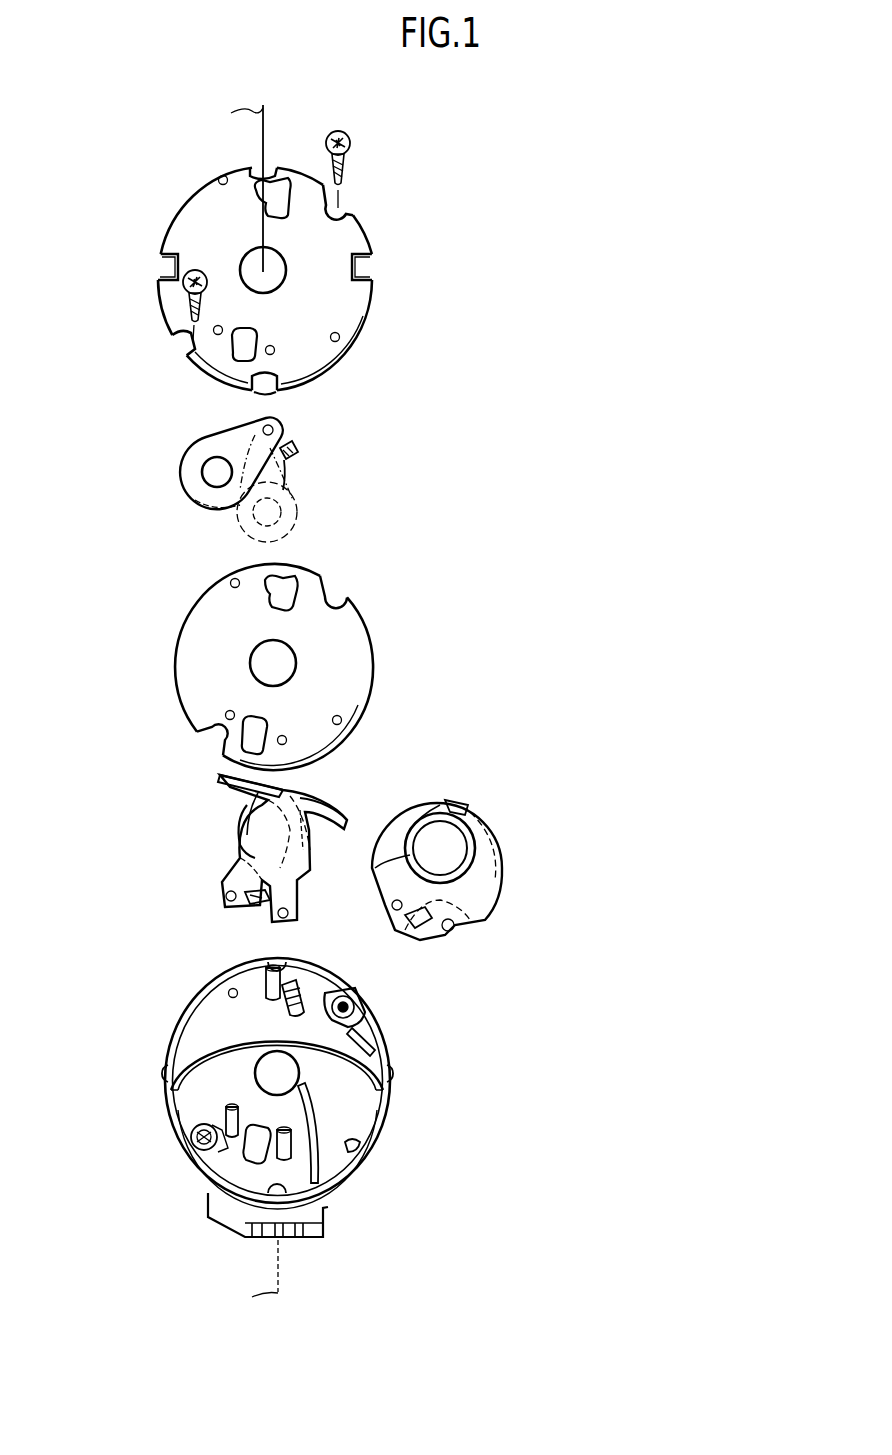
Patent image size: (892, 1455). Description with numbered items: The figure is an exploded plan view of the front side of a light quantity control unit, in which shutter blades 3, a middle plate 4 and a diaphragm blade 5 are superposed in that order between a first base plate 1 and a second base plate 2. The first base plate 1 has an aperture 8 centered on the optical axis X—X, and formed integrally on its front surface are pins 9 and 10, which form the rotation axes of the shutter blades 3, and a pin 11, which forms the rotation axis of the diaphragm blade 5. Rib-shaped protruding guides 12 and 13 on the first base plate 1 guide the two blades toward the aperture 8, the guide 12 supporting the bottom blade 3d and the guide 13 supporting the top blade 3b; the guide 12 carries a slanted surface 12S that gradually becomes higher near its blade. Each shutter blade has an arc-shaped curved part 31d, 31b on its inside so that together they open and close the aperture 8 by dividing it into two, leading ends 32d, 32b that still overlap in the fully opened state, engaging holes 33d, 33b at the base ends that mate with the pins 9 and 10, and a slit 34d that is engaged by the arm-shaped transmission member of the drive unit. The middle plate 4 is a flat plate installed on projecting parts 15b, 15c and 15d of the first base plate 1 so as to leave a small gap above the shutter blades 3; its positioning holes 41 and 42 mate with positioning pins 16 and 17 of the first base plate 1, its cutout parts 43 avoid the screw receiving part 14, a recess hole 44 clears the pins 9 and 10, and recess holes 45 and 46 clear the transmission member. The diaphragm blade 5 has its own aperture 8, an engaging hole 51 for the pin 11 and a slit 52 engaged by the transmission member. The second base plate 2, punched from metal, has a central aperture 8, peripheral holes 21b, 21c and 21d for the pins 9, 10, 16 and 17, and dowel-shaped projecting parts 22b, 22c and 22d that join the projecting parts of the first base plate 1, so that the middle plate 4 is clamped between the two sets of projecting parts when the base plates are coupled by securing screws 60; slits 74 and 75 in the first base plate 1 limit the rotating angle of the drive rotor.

The first base plate 1 is at (138, 1027).
The second base plate 2 is at (398, 234).
The shutter blades 3 is at (152, 829).
The middle plate 4 is at (390, 658).
The diaphragm blade 5 is at (334, 466).
The aperture 8 is at (253, 263).
The pin 9 is at (295, 1141).
The pin 10 is at (226, 1119).
The pin 11 is at (270, 991).
The protruding guide 12 is at (220, 1053).
The slanted surface 12S is at (370, 1045).
The protruding guide 13 is at (317, 1104).
The receiving part 14 is at (355, 1005).
The projecting part 15b is at (383, 1074).
The projecting part 15c is at (275, 963).
The projecting part 15d is at (168, 1074).
The positioning pin 16 is at (229, 992).
The positioning pin 17 is at (360, 1147).
The hole 21b is at (272, 347).
The hole 21c is at (340, 337).
The hole 21d is at (220, 177).
The dowel shape projecting part 22b is at (254, 394).
The dowel shape projecting part 22c is at (366, 269).
The dowel shape projecting part 22d is at (271, 172).
The arc shape curved part 31b is at (250, 829).
The arc shape curved part 31d is at (419, 823).
The leading end 32b is at (220, 779).
The leading end 32d is at (347, 822).
The engaging hole 33b is at (225, 901).
The engaging hole 33d is at (290, 914).
The slit 34d is at (245, 904).
The top blade 3b is at (258, 804).
The bottom blade 3d is at (312, 802).
The positioning hole 41 is at (337, 715).
The positioning hole 42 is at (235, 578).
The cutout part 43 is at (340, 596).
The recess hole 44 is at (230, 710).
The recess hole 45 is at (292, 586).
The recess hole 46 is at (240, 736).
The engaging hole 51 is at (272, 429).
The slit 52 is at (284, 462).
The securing screw 60 is at (352, 144).
The slit 74 is at (300, 988).
The slit 75 is at (256, 1151).